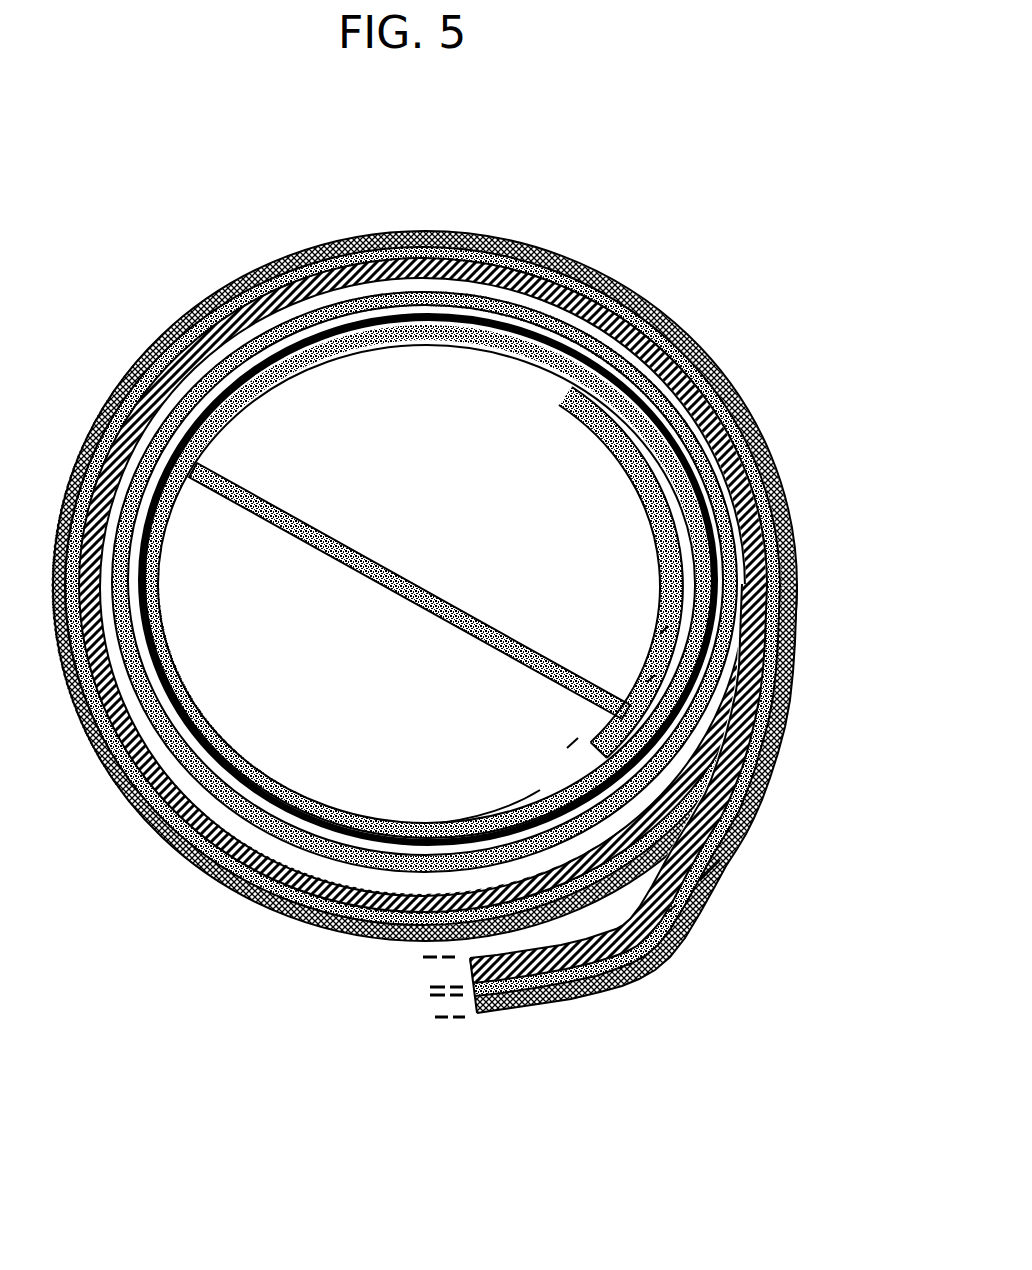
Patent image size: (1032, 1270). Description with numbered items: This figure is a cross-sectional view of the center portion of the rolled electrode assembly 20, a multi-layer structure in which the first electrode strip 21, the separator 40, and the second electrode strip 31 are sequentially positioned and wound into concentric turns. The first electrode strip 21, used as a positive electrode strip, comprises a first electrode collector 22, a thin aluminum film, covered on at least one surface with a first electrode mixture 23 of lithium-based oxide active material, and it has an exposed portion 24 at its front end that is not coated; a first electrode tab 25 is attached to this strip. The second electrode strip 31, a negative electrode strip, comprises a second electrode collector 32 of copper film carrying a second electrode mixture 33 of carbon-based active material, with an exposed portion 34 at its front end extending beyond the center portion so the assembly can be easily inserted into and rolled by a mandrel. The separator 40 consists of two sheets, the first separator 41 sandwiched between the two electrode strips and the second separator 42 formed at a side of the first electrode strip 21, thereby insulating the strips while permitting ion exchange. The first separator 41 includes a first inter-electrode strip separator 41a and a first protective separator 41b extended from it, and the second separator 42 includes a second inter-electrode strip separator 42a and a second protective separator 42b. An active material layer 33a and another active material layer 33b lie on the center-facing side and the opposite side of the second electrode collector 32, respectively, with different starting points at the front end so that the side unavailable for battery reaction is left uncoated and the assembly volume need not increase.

The electrode assembly 20 is at (130, 292).
The first electrode strip 21 is at (190, 877).
The first electrode collector 22 is at (245, 902).
The first electrode mixture 23 is at (290, 922).
The exposed portion 24 is at (716, 684).
The first electrode tab 25 is at (517, 807).
The second electrode strip 31 is at (740, 838).
The second electrode collector 32 is at (760, 800).
The second electrode mixture 33 is at (762, 933).
The active material layer 33a is at (668, 912).
The active material layer 33b is at (700, 880).
The exposed portion 34 is at (703, 743).
The separator 40 is at (653, 1038).
The first separator 41 is at (612, 952).
The first inter-electrode strip separator 41a is at (567, 748).
The first protective separator 41b is at (647, 682).
The second separator 42 is at (553, 988).
The second inter-electrode strip separator 42a is at (718, 860).
The second protective separator 42b is at (662, 634).